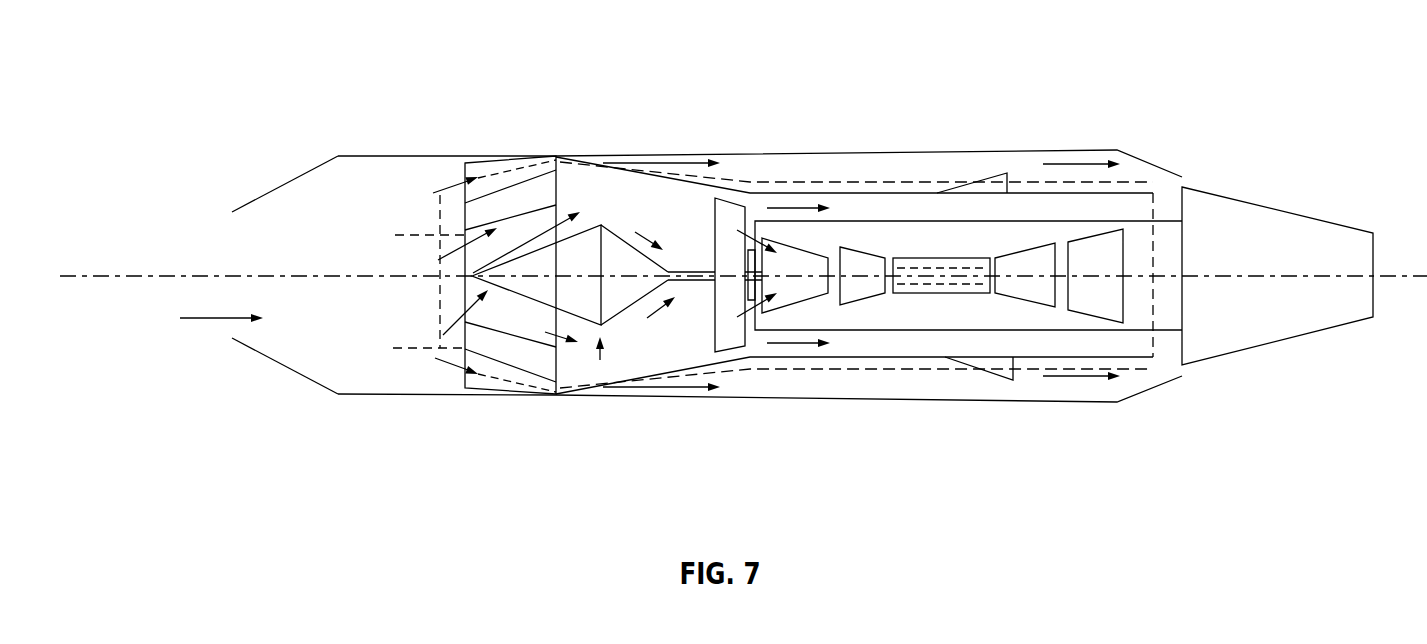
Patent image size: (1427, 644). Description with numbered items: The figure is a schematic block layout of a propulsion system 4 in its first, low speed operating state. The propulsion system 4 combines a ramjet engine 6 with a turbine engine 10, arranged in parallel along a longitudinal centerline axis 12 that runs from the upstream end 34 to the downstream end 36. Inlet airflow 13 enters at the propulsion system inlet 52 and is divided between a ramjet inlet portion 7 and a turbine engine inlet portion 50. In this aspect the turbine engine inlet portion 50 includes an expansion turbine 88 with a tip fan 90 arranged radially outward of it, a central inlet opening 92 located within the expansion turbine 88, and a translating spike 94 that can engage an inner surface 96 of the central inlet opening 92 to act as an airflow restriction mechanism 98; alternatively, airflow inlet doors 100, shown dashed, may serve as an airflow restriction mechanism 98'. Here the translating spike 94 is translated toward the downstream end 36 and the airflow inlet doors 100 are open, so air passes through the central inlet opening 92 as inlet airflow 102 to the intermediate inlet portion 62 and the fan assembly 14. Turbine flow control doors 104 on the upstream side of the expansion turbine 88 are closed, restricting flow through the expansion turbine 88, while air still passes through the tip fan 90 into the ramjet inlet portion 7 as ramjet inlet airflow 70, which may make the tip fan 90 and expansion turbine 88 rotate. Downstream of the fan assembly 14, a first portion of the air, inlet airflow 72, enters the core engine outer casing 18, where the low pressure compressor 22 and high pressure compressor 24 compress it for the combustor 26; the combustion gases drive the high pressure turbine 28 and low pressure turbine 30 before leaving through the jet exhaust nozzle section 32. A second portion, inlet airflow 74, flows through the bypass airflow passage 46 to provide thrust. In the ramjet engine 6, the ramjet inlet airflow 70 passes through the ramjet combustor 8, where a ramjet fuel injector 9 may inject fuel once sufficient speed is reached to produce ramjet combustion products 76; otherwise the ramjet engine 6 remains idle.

The propulsion system 4 is at (943, 50).
The ramjet engine 6 is at (878, 155).
The ramjet inlet portion 7 is at (848, 156).
The ramjet combustor 8 is at (1034, 158).
The ramjet fuel injector 9 is at (1000, 173).
The turbine engine 10 is at (908, 183).
The longitudinal centerline axis 12 is at (1395, 275).
The inlet airflow 13 is at (212, 320).
The fan assembly 14 is at (723, 332).
The core engine outer casing 18 is at (1136, 203).
The low pressure compressor 22 is at (807, 285).
The high pressure compressor 24 is at (867, 288).
The combustor 26 is at (953, 295).
The high pressure turbine 28 is at (1028, 290).
The low pressure turbine 30 is at (1090, 298).
The jet exhaust nozzle section 32 is at (1290, 338).
The upstream end 34 is at (63, 260).
The downstream end 36 is at (1395, 315).
The bypass airflow passage 46 is at (1150, 185).
The turbine engine inlet portion 50 is at (640, 380).
The propulsion system inlet 52 is at (237, 226).
The intermediate inlet portion 62 is at (722, 162).
The ramjet inlet airflow 70 is at (653, 162).
The inlet airflow 72 is at (737, 230).
The inlet airflow 74 is at (797, 205).
The ramjet combustion products 76 is at (1087, 160).
The expansion turbine 88 is at (540, 190).
The tip fan 90 is at (475, 160).
The central inlet opening 92 is at (450, 330).
The translating spike 94 is at (597, 233).
The inner surface 96 is at (505, 233).
The airflow restriction mechanism 98 is at (623, 393).
The airflow restriction mechanism 98' is at (345, 324).
The airflow inlet doors 100 is at (398, 235).
The inlet airflow 102 is at (540, 220).
The turbine flow control doors 104 is at (449, 212).